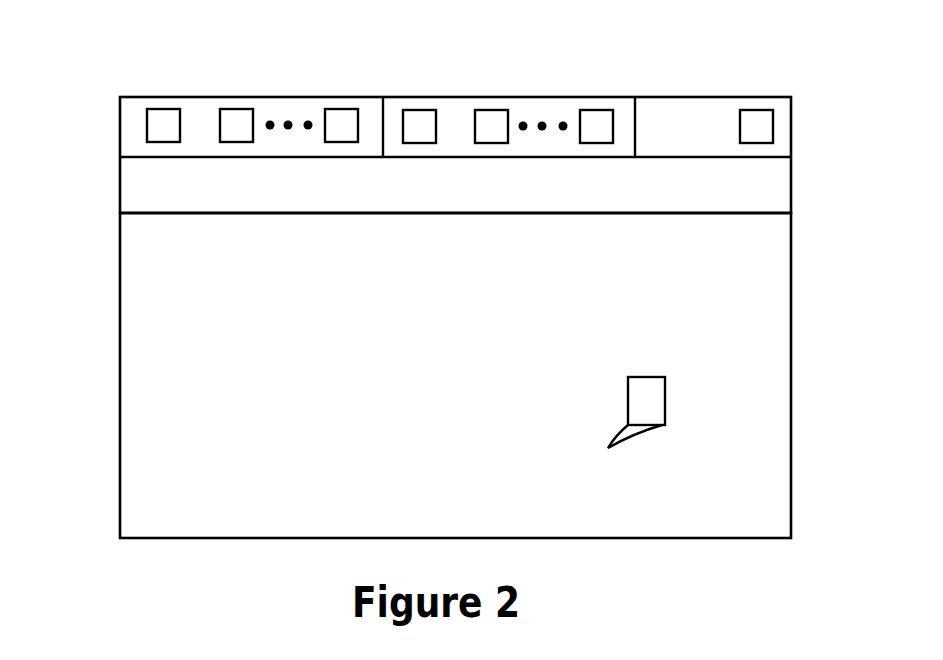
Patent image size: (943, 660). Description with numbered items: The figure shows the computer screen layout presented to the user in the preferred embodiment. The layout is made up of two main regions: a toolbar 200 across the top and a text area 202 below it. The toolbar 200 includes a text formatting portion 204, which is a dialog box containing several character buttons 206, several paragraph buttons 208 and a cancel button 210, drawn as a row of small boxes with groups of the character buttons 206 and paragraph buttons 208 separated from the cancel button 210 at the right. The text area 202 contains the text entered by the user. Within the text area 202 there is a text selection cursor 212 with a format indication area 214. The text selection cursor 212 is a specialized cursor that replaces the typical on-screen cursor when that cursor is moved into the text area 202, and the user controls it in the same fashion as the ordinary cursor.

The toolbar 200 is at (108, 97).
The text area 202 is at (108, 217).
The text formatting portion 204 is at (797, 99).
The character buttons 206 is at (343, 109).
The paragraph buttons 208 is at (593, 110).
The cancel button 210 is at (755, 110).
The text selection cursor 212 is at (640, 377).
The format indication area 214 is at (658, 398).